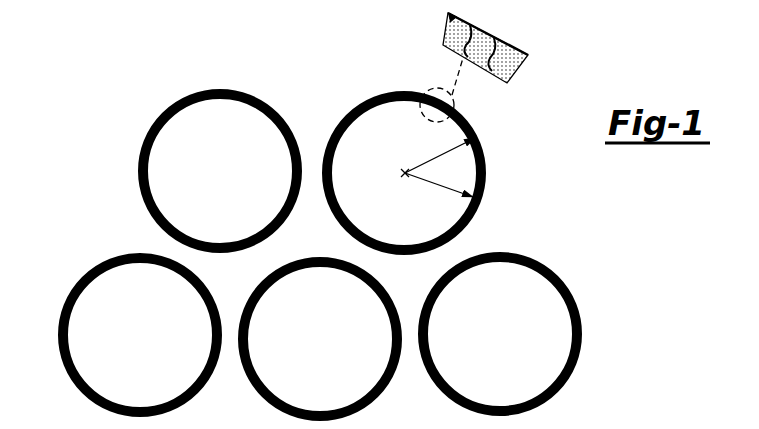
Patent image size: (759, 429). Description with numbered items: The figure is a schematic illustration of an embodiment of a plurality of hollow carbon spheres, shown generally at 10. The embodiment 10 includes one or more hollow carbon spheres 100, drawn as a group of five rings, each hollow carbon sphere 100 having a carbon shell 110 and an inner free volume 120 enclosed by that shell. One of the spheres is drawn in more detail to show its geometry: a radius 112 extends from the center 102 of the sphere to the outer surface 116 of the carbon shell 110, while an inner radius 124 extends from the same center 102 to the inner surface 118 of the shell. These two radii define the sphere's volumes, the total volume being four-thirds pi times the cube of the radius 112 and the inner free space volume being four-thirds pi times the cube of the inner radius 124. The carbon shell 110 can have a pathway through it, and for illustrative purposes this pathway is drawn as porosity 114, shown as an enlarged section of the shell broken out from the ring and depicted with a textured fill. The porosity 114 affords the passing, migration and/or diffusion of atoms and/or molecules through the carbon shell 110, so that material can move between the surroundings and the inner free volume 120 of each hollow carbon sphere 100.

The hollow carbon sphere embodiment 10 is at (108, 130).
The hollow carbon sphere 100 is at (152, 127).
The carbon shell 110 is at (143, 202).
The inner free volume 120 is at (230, 123).
The outer surface 116 is at (342, 227).
The inner surface 118 is at (335, 157).
The center 102 is at (402, 175).
The radius 112 is at (425, 163).
The inner radius 124 is at (422, 185).
The porosity 114 is at (520, 72).